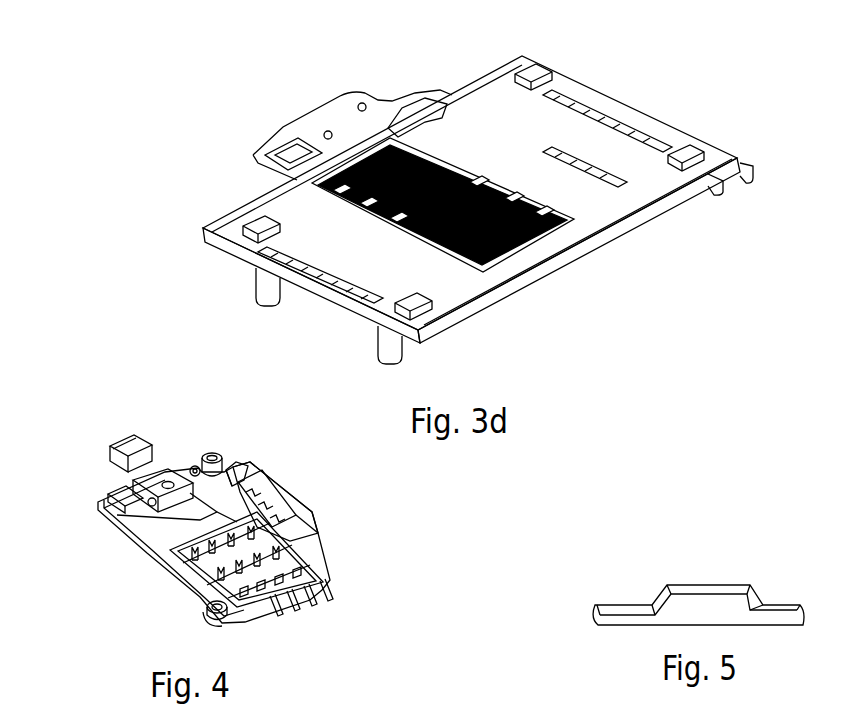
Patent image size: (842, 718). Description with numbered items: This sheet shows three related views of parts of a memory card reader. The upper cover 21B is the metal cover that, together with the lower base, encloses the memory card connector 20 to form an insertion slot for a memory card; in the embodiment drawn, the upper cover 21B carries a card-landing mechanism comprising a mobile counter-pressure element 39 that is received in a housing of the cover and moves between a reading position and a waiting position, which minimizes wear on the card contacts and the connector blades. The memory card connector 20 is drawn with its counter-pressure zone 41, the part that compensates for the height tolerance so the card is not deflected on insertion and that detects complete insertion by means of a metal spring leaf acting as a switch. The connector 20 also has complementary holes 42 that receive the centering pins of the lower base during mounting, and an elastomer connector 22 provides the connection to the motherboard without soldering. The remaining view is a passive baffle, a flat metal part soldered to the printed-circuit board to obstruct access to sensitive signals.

In FIG. 3D, the upper cover 21B is at (629, 90).
In FIG. 3D, the mobile counter-pressure element 39 is at (483, 263).
In FIG. 4, the memory card connector 20 is at (83, 505).
In FIG. 4, the elastomer connector 22 is at (108, 444).
In FIG. 4, the counter-pressure zone 41 is at (238, 462).
In FIG. 4, the complementary holes 42 is at (210, 452).